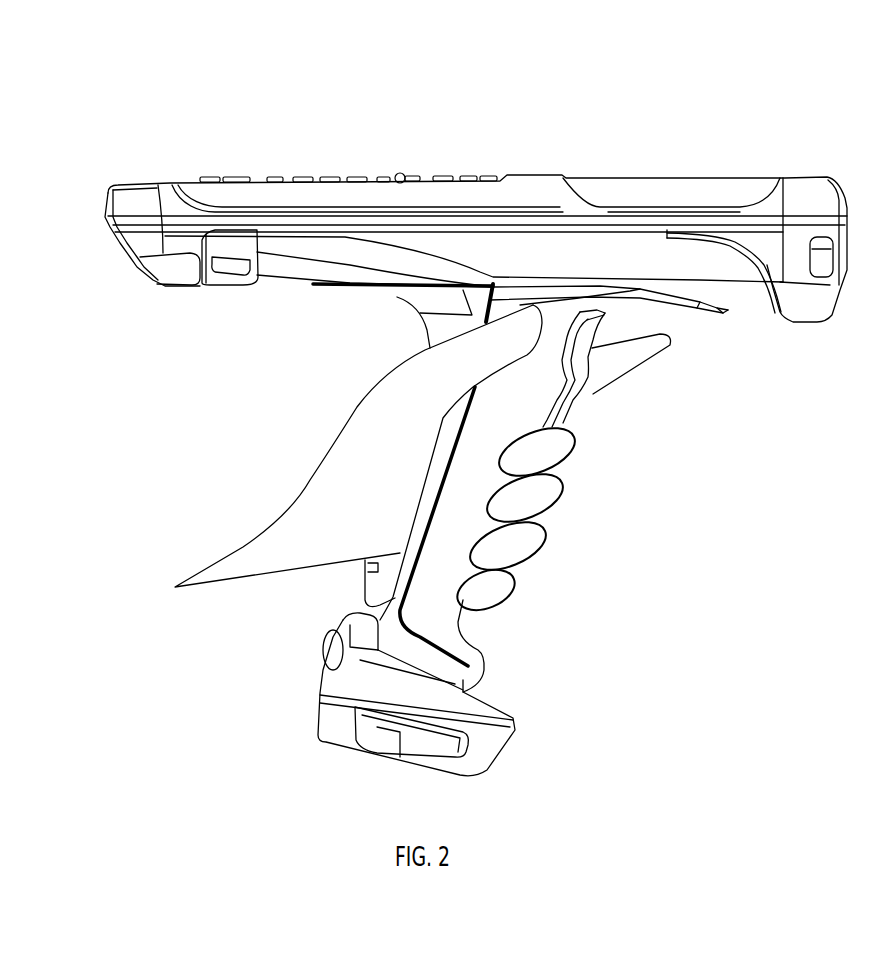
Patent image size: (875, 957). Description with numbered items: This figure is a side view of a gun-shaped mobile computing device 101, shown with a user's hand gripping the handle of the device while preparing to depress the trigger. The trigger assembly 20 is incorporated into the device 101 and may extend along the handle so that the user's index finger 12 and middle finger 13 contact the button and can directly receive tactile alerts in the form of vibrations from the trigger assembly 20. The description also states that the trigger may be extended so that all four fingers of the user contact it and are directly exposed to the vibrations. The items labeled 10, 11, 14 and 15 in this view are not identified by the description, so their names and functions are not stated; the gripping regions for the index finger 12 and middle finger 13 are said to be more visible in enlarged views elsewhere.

The gun-shaped mobile computing device 101 is at (650, 175).
The hand guard 10 is at (348, 500).
The handle 11 is at (510, 330).
The trigger assembly 20 is at (605, 327).
The index finger 12 is at (650, 378).
The middle finger 13 is at (553, 452).
The finger groove 14 is at (532, 496).
The finger groove 15 is at (522, 545).